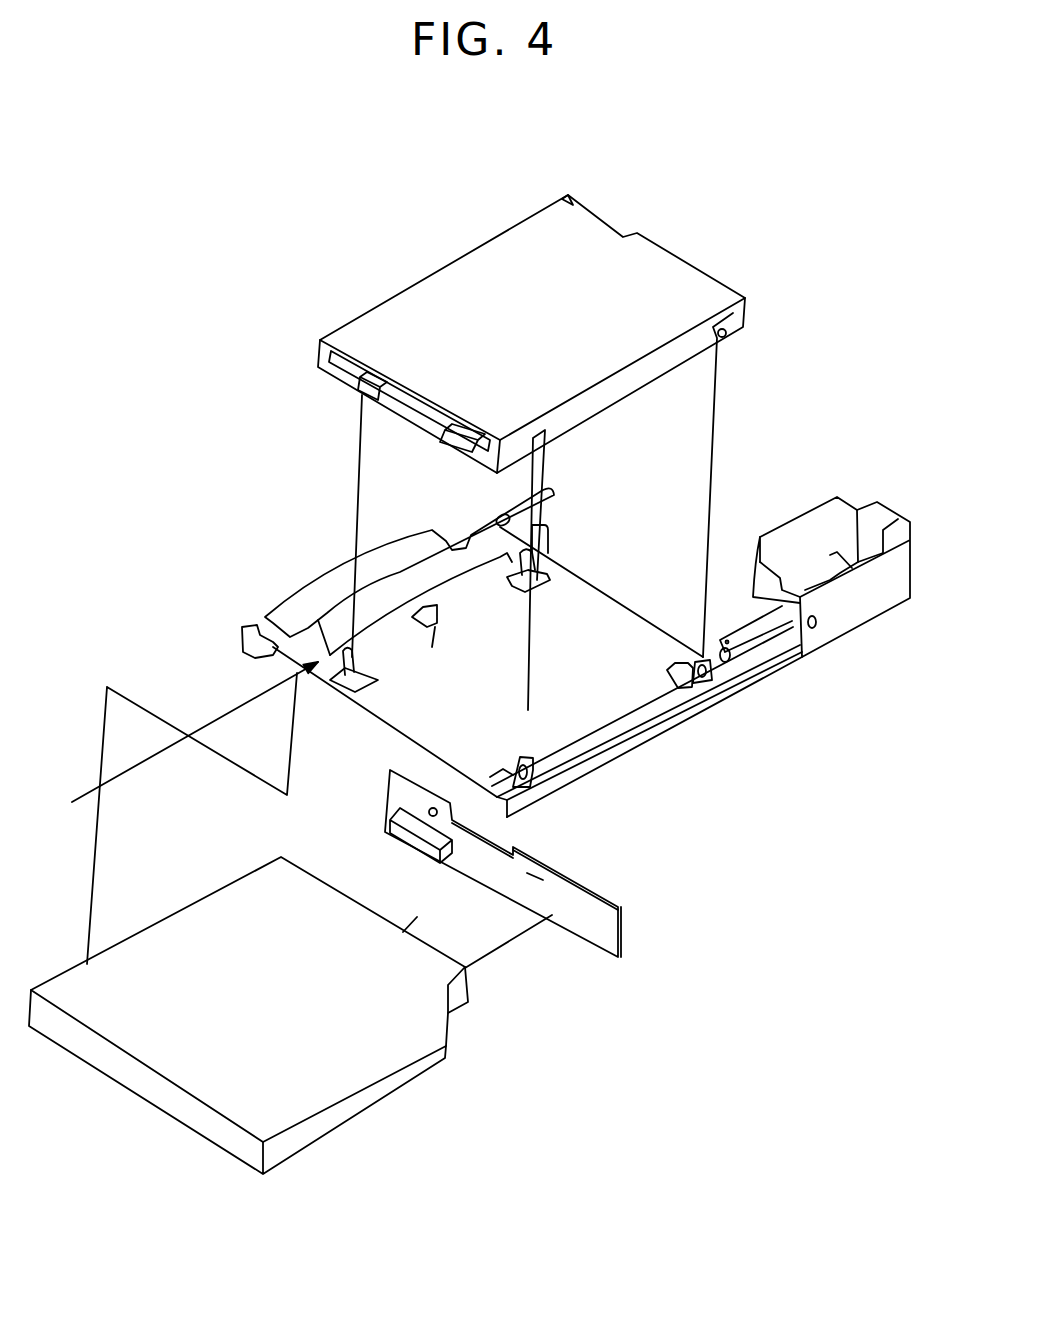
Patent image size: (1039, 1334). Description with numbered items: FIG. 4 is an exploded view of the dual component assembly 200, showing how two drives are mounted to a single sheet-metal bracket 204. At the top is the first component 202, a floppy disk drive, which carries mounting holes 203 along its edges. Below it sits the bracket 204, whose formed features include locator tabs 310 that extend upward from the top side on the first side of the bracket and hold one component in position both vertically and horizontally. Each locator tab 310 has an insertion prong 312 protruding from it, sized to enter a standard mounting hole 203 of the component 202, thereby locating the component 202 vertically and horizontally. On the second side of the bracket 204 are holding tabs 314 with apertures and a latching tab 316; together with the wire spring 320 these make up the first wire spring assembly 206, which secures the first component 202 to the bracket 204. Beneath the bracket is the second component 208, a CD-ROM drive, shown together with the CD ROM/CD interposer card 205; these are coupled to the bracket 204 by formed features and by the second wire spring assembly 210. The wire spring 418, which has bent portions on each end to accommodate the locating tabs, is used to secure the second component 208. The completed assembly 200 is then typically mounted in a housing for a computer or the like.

The dual component assembly 200 is at (505, 148).
The first component 202 is at (655, 242).
The mounting holes 203 is at (748, 322).
The bracket 204 is at (622, 745).
The CD ROM/CD interposer card 205 is at (618, 942).
The first wire spring assembly 206 is at (463, 605).
The second component 208 is at (332, 1106).
The second wire spring assembly 210 is at (317, 573).
The locator tabs 310 is at (720, 647).
The insertion prongs 312 is at (713, 677).
The holding tabs 314 is at (540, 553).
The latching tab 316 is at (357, 662).
The wire spring 320 is at (438, 577).
The wire spring 418 is at (270, 608).